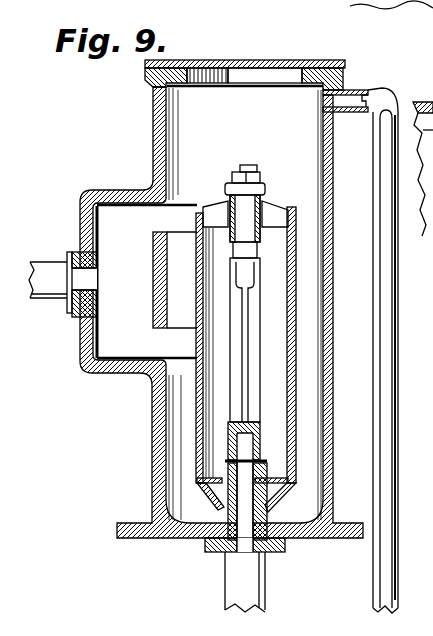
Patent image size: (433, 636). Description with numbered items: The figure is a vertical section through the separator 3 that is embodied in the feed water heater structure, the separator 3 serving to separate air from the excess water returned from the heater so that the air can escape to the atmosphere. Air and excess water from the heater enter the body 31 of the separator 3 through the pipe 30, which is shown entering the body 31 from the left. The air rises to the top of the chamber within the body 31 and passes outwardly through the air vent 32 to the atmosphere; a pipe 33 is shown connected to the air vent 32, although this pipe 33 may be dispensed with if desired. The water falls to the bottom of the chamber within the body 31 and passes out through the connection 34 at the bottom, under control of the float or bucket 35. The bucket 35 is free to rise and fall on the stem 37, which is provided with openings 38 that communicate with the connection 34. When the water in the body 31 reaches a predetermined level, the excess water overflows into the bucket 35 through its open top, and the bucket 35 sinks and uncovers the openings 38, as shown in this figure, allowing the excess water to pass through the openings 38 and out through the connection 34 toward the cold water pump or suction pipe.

The separator 3 is at (155, 100).
The body 31 is at (160, 130).
The pipe 30 is at (52, 270).
The air vent 32 is at (343, 97).
The pipe 33 is at (387, 218).
The float or bucket 35 is at (296, 325).
The stem 37 is at (243, 217).
The openings 38 is at (258, 468).
The connection 34 is at (250, 570).